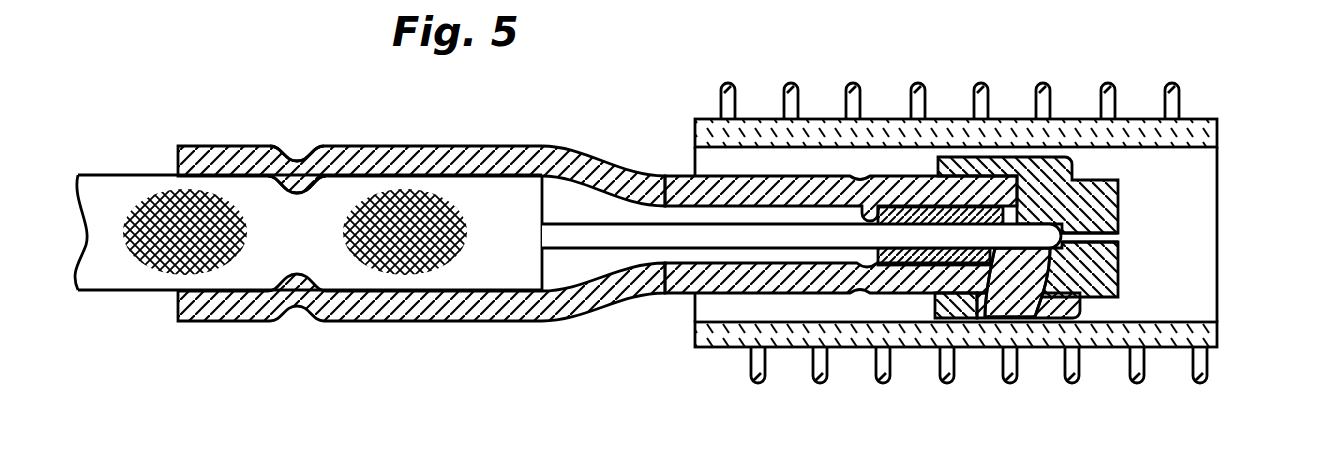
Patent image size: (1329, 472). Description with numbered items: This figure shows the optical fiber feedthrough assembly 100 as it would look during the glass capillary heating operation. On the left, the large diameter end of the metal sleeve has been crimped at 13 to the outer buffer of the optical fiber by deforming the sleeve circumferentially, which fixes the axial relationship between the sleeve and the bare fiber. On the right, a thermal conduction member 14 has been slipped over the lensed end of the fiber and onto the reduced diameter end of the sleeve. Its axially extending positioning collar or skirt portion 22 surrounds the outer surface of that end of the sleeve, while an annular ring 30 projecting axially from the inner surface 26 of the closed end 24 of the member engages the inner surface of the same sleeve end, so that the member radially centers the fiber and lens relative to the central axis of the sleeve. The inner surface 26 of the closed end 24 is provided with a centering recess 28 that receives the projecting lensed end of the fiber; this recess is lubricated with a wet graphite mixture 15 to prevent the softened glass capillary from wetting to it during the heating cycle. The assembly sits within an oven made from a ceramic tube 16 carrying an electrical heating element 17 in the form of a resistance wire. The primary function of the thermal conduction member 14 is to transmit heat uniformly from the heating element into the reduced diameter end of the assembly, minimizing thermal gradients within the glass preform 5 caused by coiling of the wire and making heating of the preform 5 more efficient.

The fiber feedthrough assembly 100 is at (455, 128).
The crimp 13 is at (297, 147).
The skirt portion 22 is at (1012, 176).
The glass preform 5 is at (897, 207).
The ceramic tube 16 is at (1217, 135).
The electrical heating element 17 is at (1176, 85).
The thermal conduction member 14 is at (1118, 208).
The wet graphite mixture 15 is at (1118, 290).
The closed end 24 is at (1118, 265).
The inner surface 26 is at (1030, 262).
The centering recess 28 is at (1040, 262).
The annular ring 30 is at (972, 295).